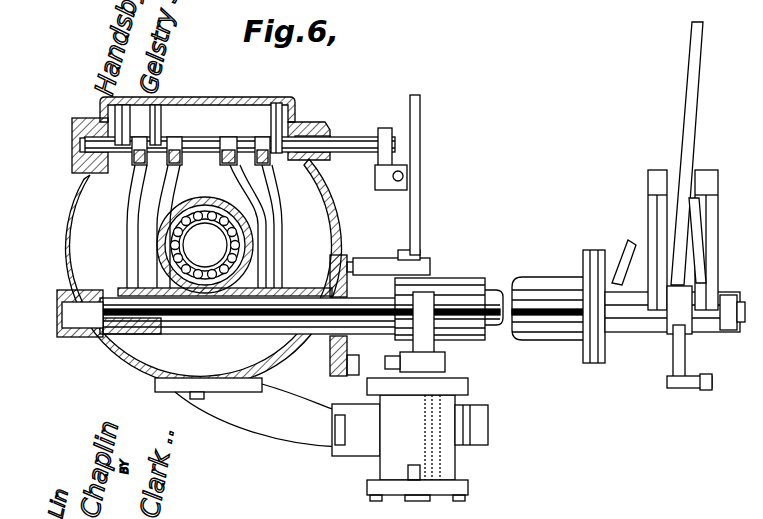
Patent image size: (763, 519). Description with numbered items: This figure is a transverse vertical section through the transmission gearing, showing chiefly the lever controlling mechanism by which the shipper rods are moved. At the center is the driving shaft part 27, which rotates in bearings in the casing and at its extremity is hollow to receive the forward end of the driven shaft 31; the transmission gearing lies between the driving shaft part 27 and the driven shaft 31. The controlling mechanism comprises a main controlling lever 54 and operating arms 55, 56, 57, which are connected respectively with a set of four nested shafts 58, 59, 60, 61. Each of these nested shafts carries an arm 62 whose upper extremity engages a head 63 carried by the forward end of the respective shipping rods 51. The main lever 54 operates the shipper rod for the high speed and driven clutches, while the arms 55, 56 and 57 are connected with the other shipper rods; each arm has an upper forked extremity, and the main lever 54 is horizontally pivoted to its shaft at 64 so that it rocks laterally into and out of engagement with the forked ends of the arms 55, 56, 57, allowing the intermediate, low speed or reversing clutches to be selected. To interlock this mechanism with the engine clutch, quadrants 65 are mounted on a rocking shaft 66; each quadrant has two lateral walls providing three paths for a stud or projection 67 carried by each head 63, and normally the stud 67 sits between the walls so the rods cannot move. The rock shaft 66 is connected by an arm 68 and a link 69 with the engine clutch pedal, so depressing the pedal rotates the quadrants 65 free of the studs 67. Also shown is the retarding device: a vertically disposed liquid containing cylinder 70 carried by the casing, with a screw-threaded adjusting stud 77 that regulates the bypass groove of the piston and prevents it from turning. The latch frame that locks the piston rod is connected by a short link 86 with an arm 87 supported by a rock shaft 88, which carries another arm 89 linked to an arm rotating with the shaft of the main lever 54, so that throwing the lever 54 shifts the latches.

The driving shaft part 27 is at (421, 153).
The driven shaft 31 is at (250, 243).
The shipping rods 51 is at (222, 160).
The main controlling lever 54 is at (697, 93).
The operating arm 55 is at (648, 222).
The operating arm 56 is at (693, 221).
The operating arm 57 is at (712, 193).
The nested shaft 58 is at (238, 326).
The nested shaft 59 is at (313, 346).
The nested shaft 60 is at (157, 328).
The nested shaft 61 is at (113, 336).
The arm 62 is at (150, 196).
The head 63 is at (253, 138).
The horizontal pivot 64 is at (683, 305).
The quadrants 65 is at (160, 115).
The rocking shaft 66 is at (343, 142).
The stud or projection 67 is at (175, 145).
The arm 68 is at (376, 165).
The link 69 is at (396, 189).
The liquid containing cylinder 70 is at (417, 439).
The screw-threaded adjusting stud 77 is at (480, 426).
The short link 86 is at (400, 359).
The arm 87 is at (437, 347).
The rock shaft 88 is at (558, 306).
The arm 89 is at (672, 349).